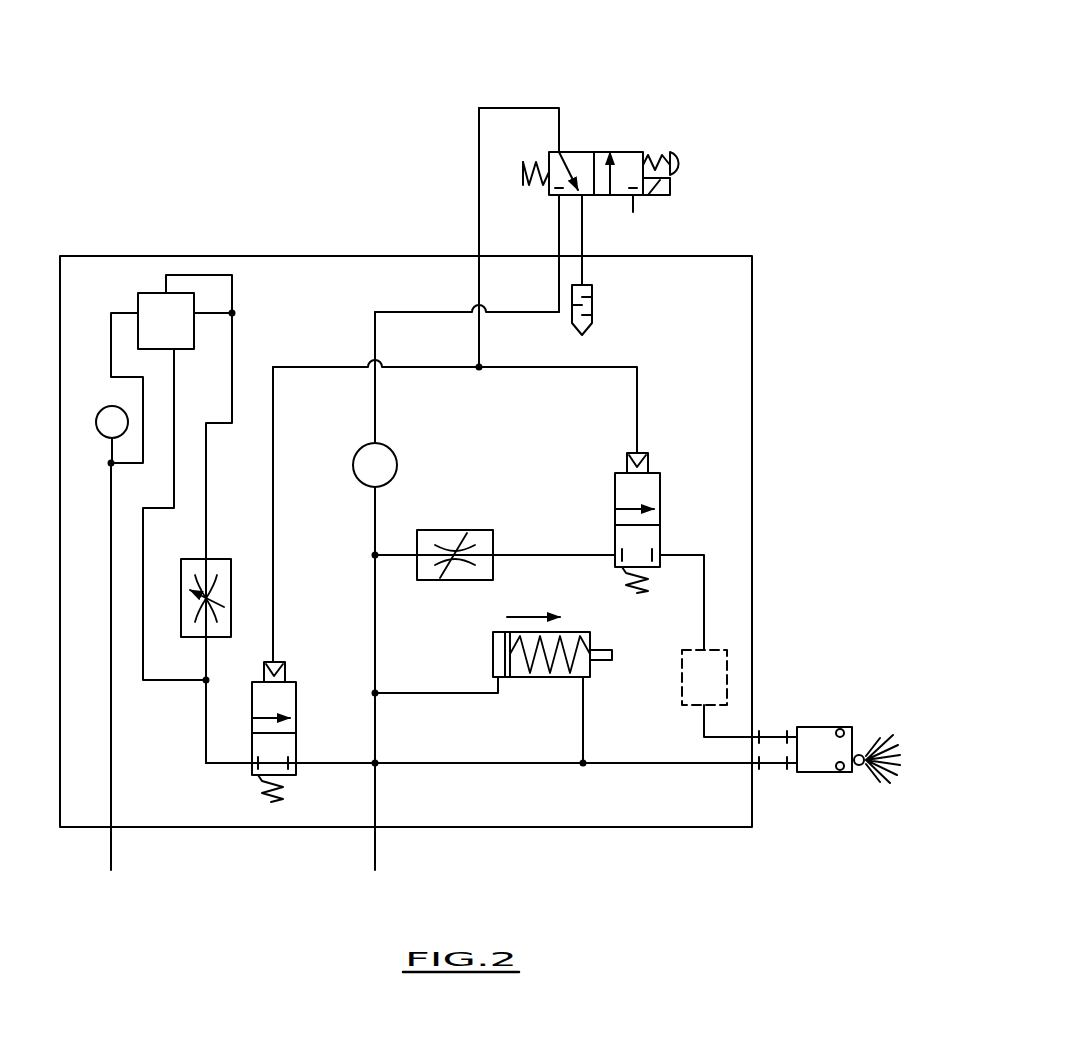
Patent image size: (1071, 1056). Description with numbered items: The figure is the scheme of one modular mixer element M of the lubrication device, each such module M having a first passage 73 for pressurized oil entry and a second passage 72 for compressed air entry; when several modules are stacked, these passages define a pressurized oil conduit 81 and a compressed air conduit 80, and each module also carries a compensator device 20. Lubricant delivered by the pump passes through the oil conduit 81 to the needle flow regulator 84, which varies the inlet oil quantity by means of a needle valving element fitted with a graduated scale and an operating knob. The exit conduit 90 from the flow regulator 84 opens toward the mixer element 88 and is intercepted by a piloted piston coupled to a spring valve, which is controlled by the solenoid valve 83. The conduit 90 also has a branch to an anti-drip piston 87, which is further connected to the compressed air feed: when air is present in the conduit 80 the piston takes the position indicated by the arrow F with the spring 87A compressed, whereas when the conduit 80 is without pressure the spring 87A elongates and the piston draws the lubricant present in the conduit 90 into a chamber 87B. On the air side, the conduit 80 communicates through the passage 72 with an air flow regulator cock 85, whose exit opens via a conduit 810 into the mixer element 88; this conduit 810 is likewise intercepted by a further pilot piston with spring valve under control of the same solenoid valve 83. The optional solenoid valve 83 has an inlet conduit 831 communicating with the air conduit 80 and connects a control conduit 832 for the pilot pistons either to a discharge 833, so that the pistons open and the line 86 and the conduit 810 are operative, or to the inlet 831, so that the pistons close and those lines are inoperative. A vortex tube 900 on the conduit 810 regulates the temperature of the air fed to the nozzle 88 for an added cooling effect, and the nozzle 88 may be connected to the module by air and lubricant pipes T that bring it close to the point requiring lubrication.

The modular element M is at (282, 245).
The compensator device 20 is at (162, 323).
The pressurized oil conduit 81 is at (100, 410).
The first passage 73 is at (100, 437).
The needle flow regulator 84 is at (182, 660).
The inlet conduit 831 is at (418, 310).
The control conduit 832 is at (559, 130).
The solenoid valve 83 is at (626, 134).
The discharge 833 is at (582, 230).
The compressed air conduit 80 is at (368, 441).
The second passage 72 is at (397, 462).
The conduit 810 is at (555, 553).
The air flow regulator cock 85 is at (463, 592).
The anti-drip piston 87 is at (566, 676).
The spring 87A is at (585, 640).
The chamber 87B is at (577, 668).
The arrow F is at (522, 614).
The vortex tube 900 is at (727, 678).
The air and lubricant pipes T is at (778, 763).
The conduit 90 is at (206, 726).
The line 86 is at (458, 772).
The mixer element 88 is at (860, 782).